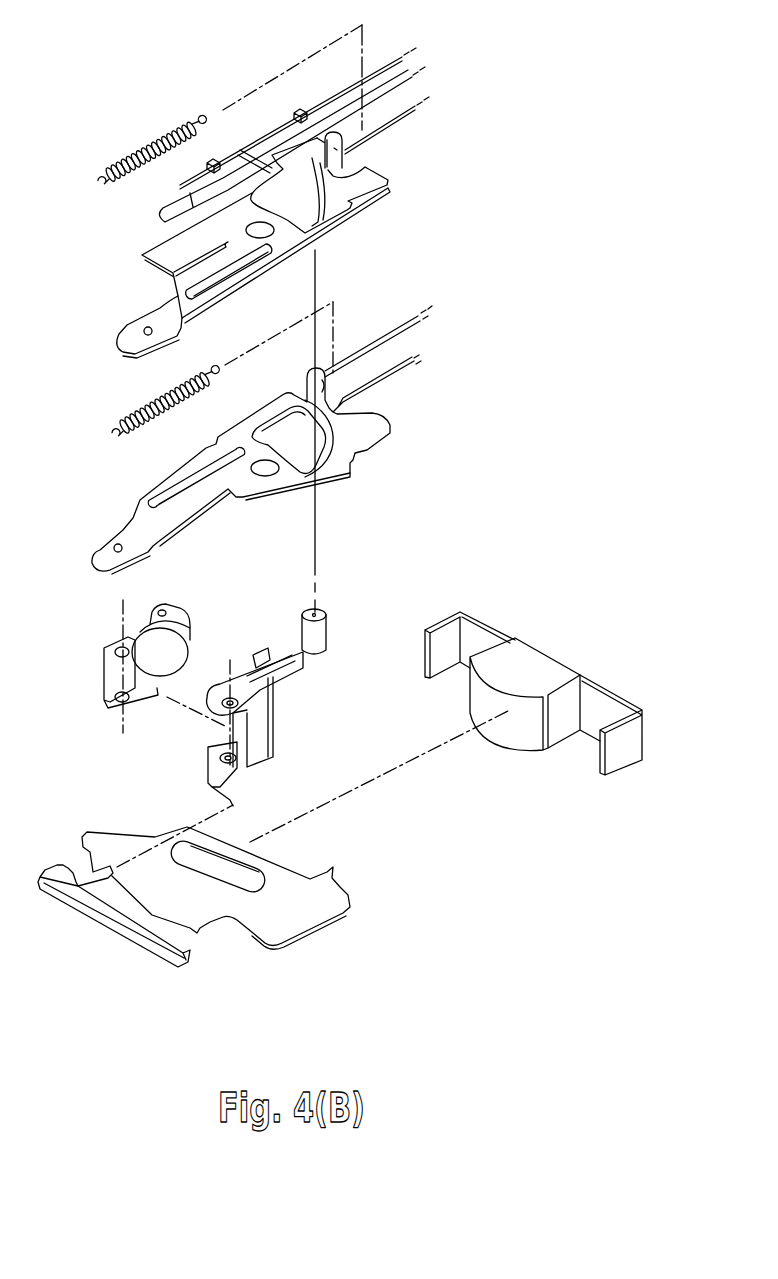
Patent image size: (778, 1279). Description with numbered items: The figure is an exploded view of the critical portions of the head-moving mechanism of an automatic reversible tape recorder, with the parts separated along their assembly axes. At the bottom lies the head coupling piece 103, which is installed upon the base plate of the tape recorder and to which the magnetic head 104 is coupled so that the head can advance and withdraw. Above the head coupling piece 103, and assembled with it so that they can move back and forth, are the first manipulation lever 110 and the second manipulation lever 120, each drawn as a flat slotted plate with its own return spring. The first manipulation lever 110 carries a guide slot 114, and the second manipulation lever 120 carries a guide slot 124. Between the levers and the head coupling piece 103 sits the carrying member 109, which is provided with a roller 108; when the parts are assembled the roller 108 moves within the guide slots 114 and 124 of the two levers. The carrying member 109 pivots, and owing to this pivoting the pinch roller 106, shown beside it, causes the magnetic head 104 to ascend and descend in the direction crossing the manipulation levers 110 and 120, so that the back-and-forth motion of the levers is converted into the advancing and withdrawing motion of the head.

The head coupling piece 103 is at (313, 910).
The magnetic head 104 is at (530, 663).
The pinch roller 106 is at (200, 637).
The roller 108 is at (322, 630).
The carrying member 109 is at (263, 733).
The first manipulation lever 110 is at (160, 318).
The guide slot 114 is at (303, 203).
The second manipulation lever 120 is at (133, 533).
The guide slot 124 is at (307, 443).